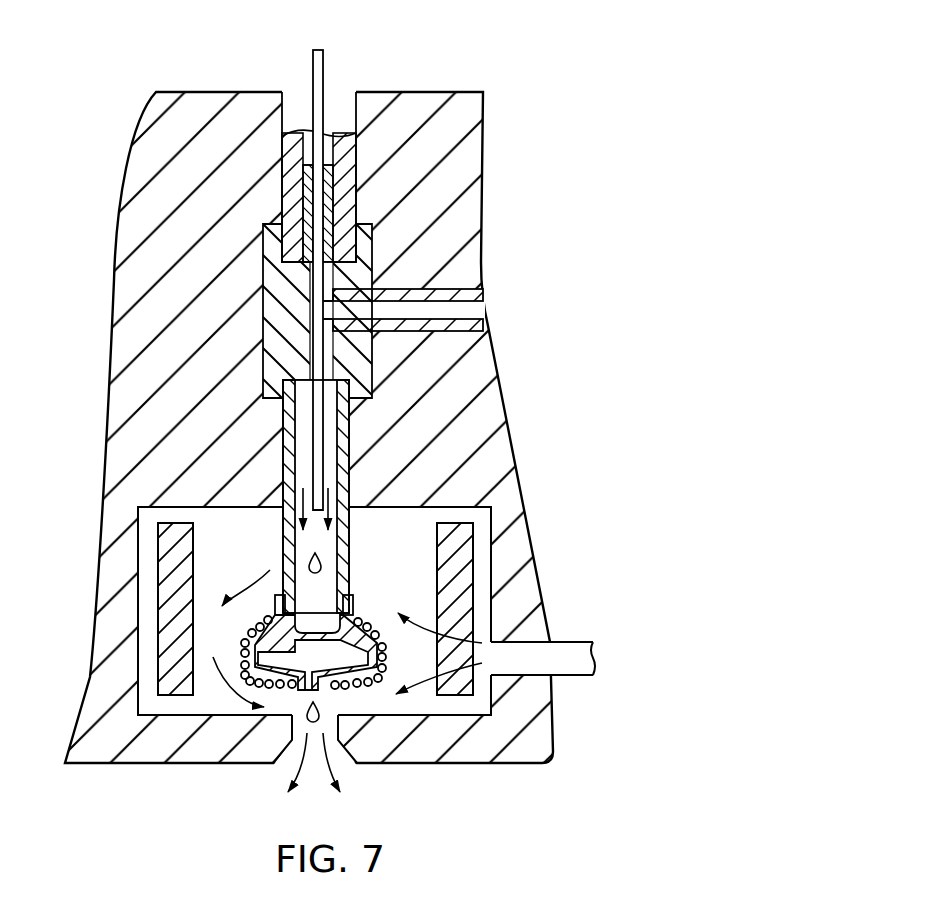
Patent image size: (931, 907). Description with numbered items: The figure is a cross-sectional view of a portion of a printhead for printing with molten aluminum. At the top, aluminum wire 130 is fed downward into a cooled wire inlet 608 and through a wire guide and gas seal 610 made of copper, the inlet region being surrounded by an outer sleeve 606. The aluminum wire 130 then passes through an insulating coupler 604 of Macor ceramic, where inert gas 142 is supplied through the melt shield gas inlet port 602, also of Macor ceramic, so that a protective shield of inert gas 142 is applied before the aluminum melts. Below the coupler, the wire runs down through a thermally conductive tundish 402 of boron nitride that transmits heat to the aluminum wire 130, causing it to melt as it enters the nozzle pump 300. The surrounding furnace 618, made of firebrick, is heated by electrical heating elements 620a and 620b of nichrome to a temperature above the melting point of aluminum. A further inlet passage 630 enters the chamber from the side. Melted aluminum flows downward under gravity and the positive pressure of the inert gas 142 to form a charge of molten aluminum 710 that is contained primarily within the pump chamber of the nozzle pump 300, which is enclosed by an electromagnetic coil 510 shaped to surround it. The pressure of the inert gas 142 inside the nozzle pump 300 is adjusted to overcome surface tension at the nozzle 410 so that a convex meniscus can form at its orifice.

The cooled wire inlet 608 is at (287, 76).
The aluminum wire 130 is at (327, 72).
The wire guide and gas seal 610 is at (327, 187).
The outer sleeve 606 is at (345, 202).
The insulating coupler 604 is at (277, 305).
The melt shield gas inlet port 602 is at (447, 290).
The inert gas 142 is at (434, 310).
The tundish 402 is at (355, 445).
The furnace 618 is at (218, 396).
The electrical heating element 620a is at (173, 573).
The electrical heating element 620b is at (462, 570).
The charge of molten aluminum 710 is at (275, 645).
The electromagnetic coil 510 is at (365, 620).
The inlet pipe 630 is at (570, 642).
The nozzle pump 300 is at (222, 641).
The nozzle 410 is at (330, 692).